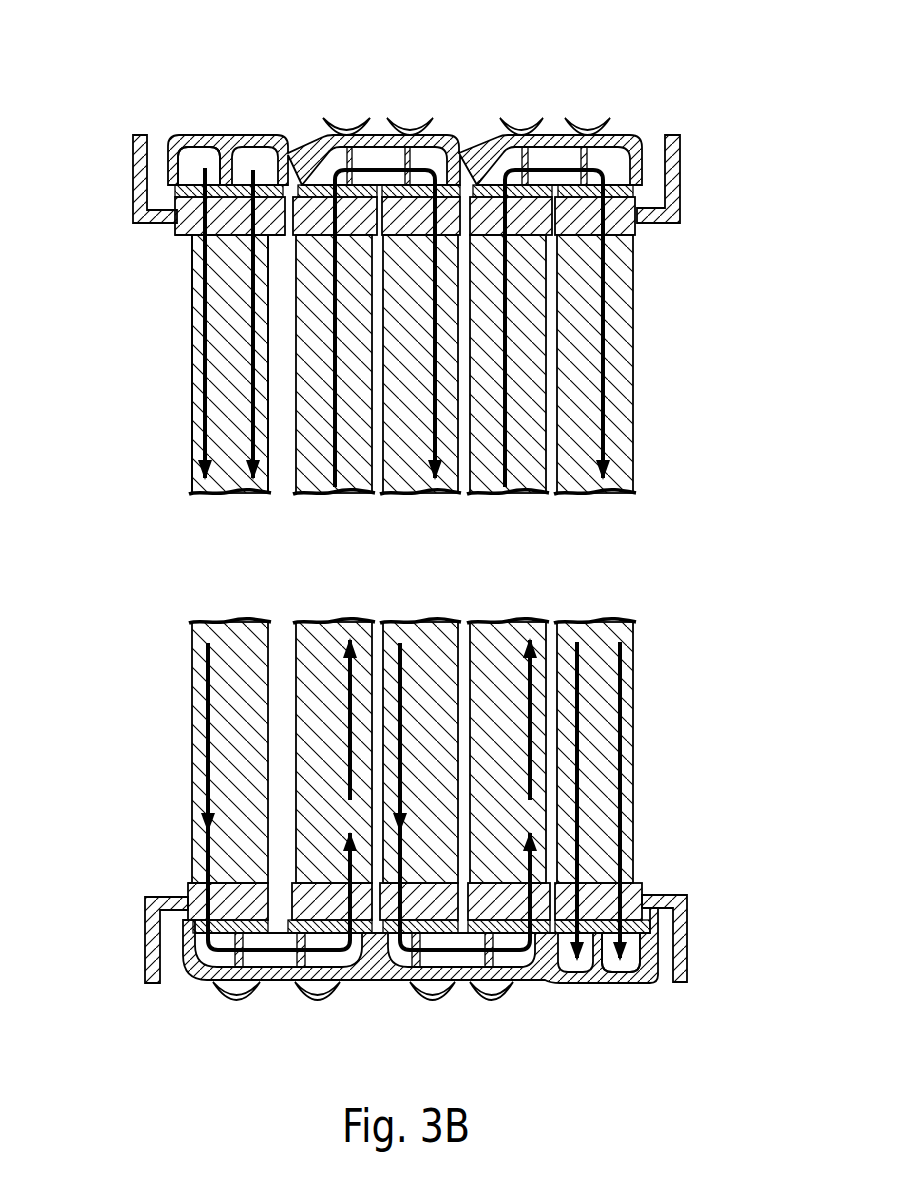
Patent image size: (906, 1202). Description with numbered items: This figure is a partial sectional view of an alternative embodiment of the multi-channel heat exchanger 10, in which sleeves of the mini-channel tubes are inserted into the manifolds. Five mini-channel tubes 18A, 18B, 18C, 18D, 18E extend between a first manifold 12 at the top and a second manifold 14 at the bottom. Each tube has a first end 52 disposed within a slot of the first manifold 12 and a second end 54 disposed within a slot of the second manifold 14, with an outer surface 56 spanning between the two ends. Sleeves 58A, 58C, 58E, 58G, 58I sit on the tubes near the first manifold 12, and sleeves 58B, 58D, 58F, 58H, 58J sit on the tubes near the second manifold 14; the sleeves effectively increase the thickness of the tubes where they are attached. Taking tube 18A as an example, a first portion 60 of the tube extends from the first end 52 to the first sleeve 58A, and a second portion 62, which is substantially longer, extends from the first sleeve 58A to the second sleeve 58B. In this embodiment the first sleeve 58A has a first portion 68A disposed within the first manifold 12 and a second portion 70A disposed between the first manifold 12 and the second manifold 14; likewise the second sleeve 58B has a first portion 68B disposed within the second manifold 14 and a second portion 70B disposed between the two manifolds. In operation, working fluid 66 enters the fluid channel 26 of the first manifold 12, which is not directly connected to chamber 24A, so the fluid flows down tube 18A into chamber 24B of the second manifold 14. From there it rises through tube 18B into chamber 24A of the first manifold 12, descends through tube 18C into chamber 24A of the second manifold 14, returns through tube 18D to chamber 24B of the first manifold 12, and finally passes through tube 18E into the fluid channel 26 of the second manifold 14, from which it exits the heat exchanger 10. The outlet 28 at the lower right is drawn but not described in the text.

The heat exchanger 10 is at (134, 762).
The first manifold 12 is at (668, 84).
The second manifold 14 is at (665, 977).
The mini-channel tube 18A is at (230, 559).
The mini-channel tube 18B is at (334, 559).
The mini-channel tube 18C is at (420, 559).
The mini-channel tube 18D is at (508, 559).
The mini-channel tube 18E is at (595, 559).
The chamber 24A is at (377, 160).
The chamber 24B is at (551, 160).
The fluid channel 26 is at (212, 160).
The outlet 28 is at (628, 957).
The first end 52 is at (193, 177).
The second end 54 is at (200, 968).
The outer surface 56 is at (190, 318).
The first sleeve 58A is at (230, 216).
The second sleeve 58B is at (228, 901).
The sleeve 58C is at (335, 216).
The sleeve 58D is at (332, 901).
The sleeve 58E is at (421, 216).
The sleeve 58F is at (419, 901).
The sleeve 58G is at (511, 216).
The sleeve 58H is at (509, 901).
The sleeve 58I is at (595, 216).
The sleeve 58J is at (598, 901).
The first portion 60 is at (253, 178).
The second portion 62 is at (233, 414).
The working fluid 66 is at (203, 437).
The first portion 68A is at (183, 203).
The first portion 68B is at (203, 916).
The second portion 70A is at (185, 227).
The second portion 70B is at (190, 893).